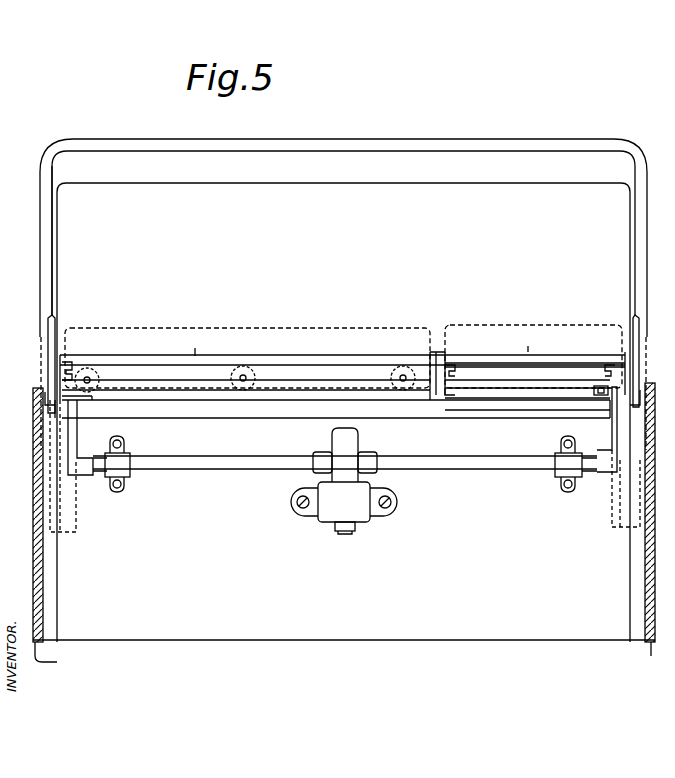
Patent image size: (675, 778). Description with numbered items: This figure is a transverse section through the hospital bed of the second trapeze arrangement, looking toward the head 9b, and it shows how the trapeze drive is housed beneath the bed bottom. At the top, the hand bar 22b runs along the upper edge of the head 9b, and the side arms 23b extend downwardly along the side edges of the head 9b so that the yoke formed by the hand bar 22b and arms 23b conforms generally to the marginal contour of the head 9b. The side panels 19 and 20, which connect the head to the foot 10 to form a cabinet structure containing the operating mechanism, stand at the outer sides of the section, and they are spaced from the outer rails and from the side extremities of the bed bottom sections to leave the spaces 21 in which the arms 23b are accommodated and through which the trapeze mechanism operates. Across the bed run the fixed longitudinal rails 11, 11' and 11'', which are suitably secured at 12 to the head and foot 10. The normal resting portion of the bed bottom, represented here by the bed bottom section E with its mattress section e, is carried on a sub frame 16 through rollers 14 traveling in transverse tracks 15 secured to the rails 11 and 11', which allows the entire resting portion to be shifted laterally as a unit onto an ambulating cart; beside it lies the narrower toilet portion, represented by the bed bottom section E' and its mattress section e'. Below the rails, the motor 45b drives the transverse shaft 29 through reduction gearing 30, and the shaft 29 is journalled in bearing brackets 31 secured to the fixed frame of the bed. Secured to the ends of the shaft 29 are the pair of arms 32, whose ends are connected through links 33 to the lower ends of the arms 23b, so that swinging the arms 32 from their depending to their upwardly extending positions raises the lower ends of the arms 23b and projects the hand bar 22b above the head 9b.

The hand bar 22b is at (345, 151).
The head 9b is at (333, 248).
The arms 23b is at (46, 265).
The links 33 is at (48, 352).
The foot 10 is at (33, 433).
The side panel 20 is at (57, 659).
The side panel 19 is at (651, 661).
The spaces 21 is at (45, 392).
The mattress section e is at (247, 349).
The bed bottom section E is at (193, 346).
The mattress section e' is at (533, 347).
The bed bottom section E' is at (526, 343).
The sub frame 16 is at (270, 372).
The longitudinal rail 11 is at (90, 365).
The longitudinal rail 11' is at (470, 380).
The longitudinal rail 11'' is at (590, 380).
The rollers 14 is at (228, 395).
The transverse tracks 15 is at (296, 390).
The securing means 12 is at (457, 415).
The transverse shaft 29 is at (463, 471).
The reduction gearing 30 is at (358, 432).
The motor 45b is at (318, 525).
The bearing brackets 31 is at (140, 440).
The arms 32 is at (78, 436).